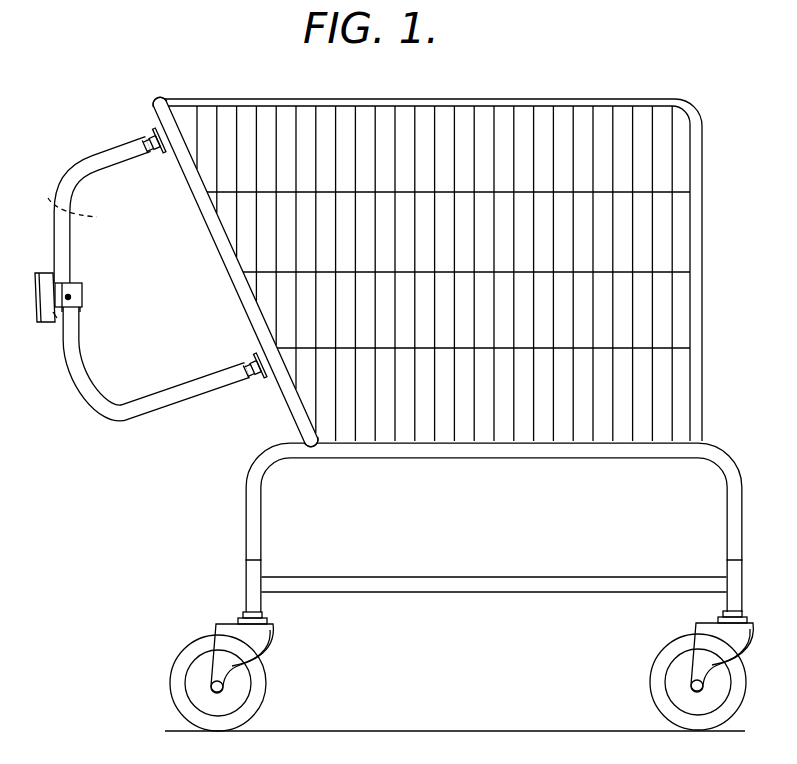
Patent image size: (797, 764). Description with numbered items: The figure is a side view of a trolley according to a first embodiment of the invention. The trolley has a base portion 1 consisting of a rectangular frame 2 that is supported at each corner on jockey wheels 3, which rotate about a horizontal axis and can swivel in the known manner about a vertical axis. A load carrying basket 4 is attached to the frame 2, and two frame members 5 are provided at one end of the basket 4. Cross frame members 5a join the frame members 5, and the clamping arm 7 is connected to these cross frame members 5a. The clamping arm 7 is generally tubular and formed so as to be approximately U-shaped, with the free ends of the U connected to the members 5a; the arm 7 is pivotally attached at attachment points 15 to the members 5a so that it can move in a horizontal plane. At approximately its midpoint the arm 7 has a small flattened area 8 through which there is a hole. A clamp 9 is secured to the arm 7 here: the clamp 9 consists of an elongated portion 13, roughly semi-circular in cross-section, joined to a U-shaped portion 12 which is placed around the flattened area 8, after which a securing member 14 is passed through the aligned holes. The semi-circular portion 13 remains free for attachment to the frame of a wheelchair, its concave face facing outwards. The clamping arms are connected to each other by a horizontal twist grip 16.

The base portion 1 is at (233, 531).
The rectangular frame 2 is at (728, 503).
The jockey wheels 3 is at (662, 657).
The load carrying basket 4 is at (545, 115).
The frame members 5 is at (166, 98).
The cross frame members 5a is at (166, 152).
The clamping arm 7 is at (89, 165).
The flattened area 8 is at (74, 282).
The clamp 9 is at (43, 333).
The U-shaped portion 12 is at (82, 290).
The elongated portion 13 is at (55, 322).
The securing member 14 is at (72, 297).
The attachment points 15 is at (141, 128).
The twist grip 16 is at (91, 224).